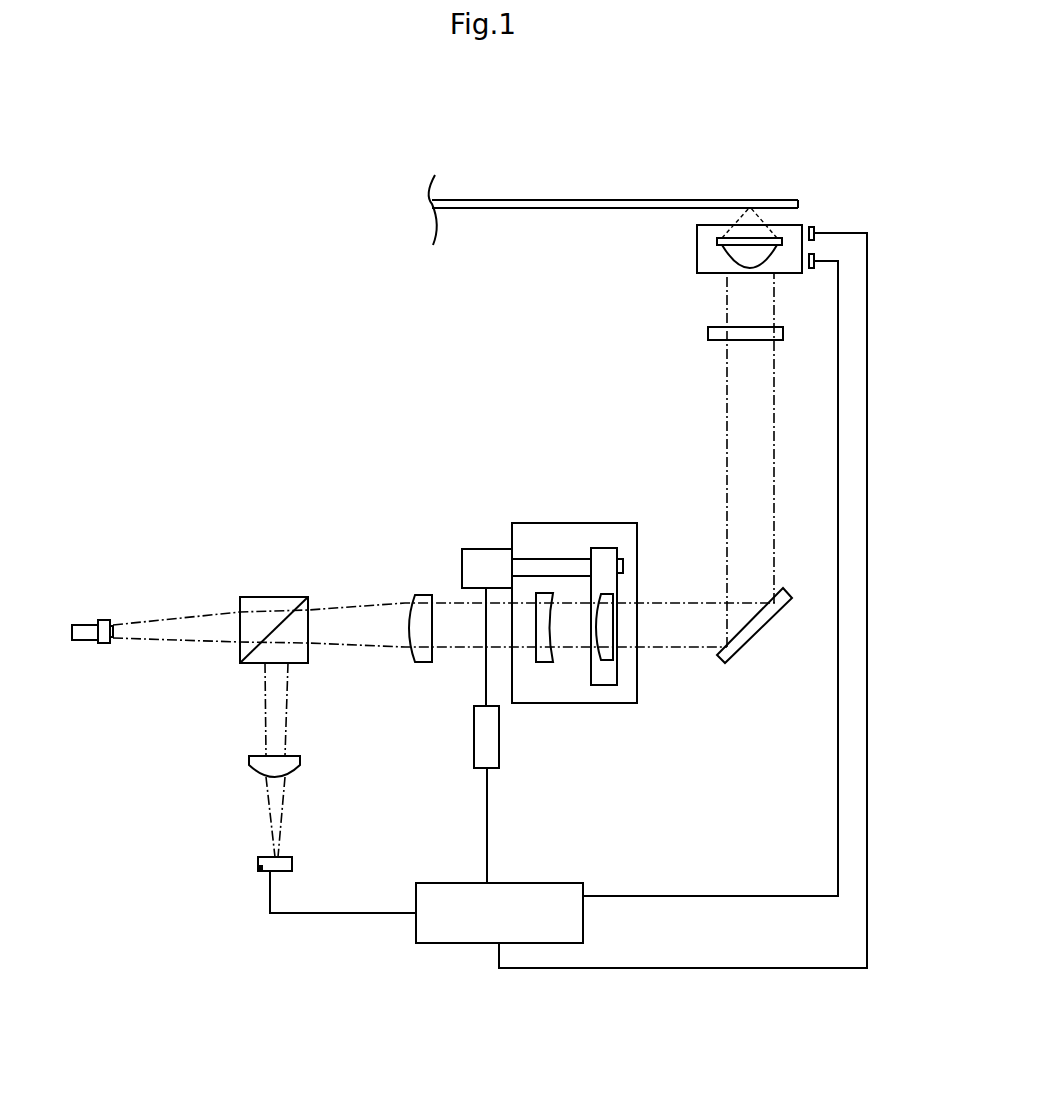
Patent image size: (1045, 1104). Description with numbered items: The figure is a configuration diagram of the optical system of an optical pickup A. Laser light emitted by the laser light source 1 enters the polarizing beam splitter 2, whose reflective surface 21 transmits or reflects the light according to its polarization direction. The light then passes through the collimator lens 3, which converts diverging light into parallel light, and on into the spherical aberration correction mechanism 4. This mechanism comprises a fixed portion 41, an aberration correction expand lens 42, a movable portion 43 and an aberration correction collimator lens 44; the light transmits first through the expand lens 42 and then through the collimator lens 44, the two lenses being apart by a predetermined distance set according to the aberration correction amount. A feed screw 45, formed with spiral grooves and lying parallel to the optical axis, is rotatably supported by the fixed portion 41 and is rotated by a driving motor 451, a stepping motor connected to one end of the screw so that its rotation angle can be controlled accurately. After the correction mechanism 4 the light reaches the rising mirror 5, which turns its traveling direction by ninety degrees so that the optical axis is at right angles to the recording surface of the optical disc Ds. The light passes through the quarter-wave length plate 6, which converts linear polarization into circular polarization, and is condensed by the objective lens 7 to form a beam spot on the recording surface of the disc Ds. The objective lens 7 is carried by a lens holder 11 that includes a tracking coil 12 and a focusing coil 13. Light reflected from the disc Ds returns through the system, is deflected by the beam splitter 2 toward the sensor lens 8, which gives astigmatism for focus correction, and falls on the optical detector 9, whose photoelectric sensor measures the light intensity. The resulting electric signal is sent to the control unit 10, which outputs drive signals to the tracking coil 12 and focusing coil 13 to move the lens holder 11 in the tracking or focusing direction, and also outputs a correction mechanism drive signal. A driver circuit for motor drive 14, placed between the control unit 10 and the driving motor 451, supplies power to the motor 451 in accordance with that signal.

The optical pickup A is at (250, 172).
The laser light source 1 is at (98, 643).
The polarizing beam splitter 2 is at (250, 581).
The reflective surface 21 is at (304, 597).
The collimator lens 3 is at (420, 648).
The spherical aberration correction mechanism 4 is at (561, 614).
The fixed portion 41 is at (637, 692).
The aberration correction expand lens 42 is at (541, 657).
The movable portion 43 is at (608, 580).
The aberration correction collimator lens 44 is at (607, 680).
The feed screw 45 is at (572, 565).
The driving motor 451 is at (474, 557).
The rising mirror 5 is at (755, 630).
The quarter-wave length plate 6 is at (712, 333).
The objective lens 7 is at (717, 241).
The lens holder 11 is at (700, 265).
The tracking coil 12 is at (812, 226).
The focusing coil 13 is at (812, 270).
The sensor lens 8 is at (292, 767).
The optical detector 9 is at (258, 868).
The control unit 10 is at (430, 937).
The driver circuit for motor drive 14 is at (480, 758).
The optical disc Ds is at (483, 208).